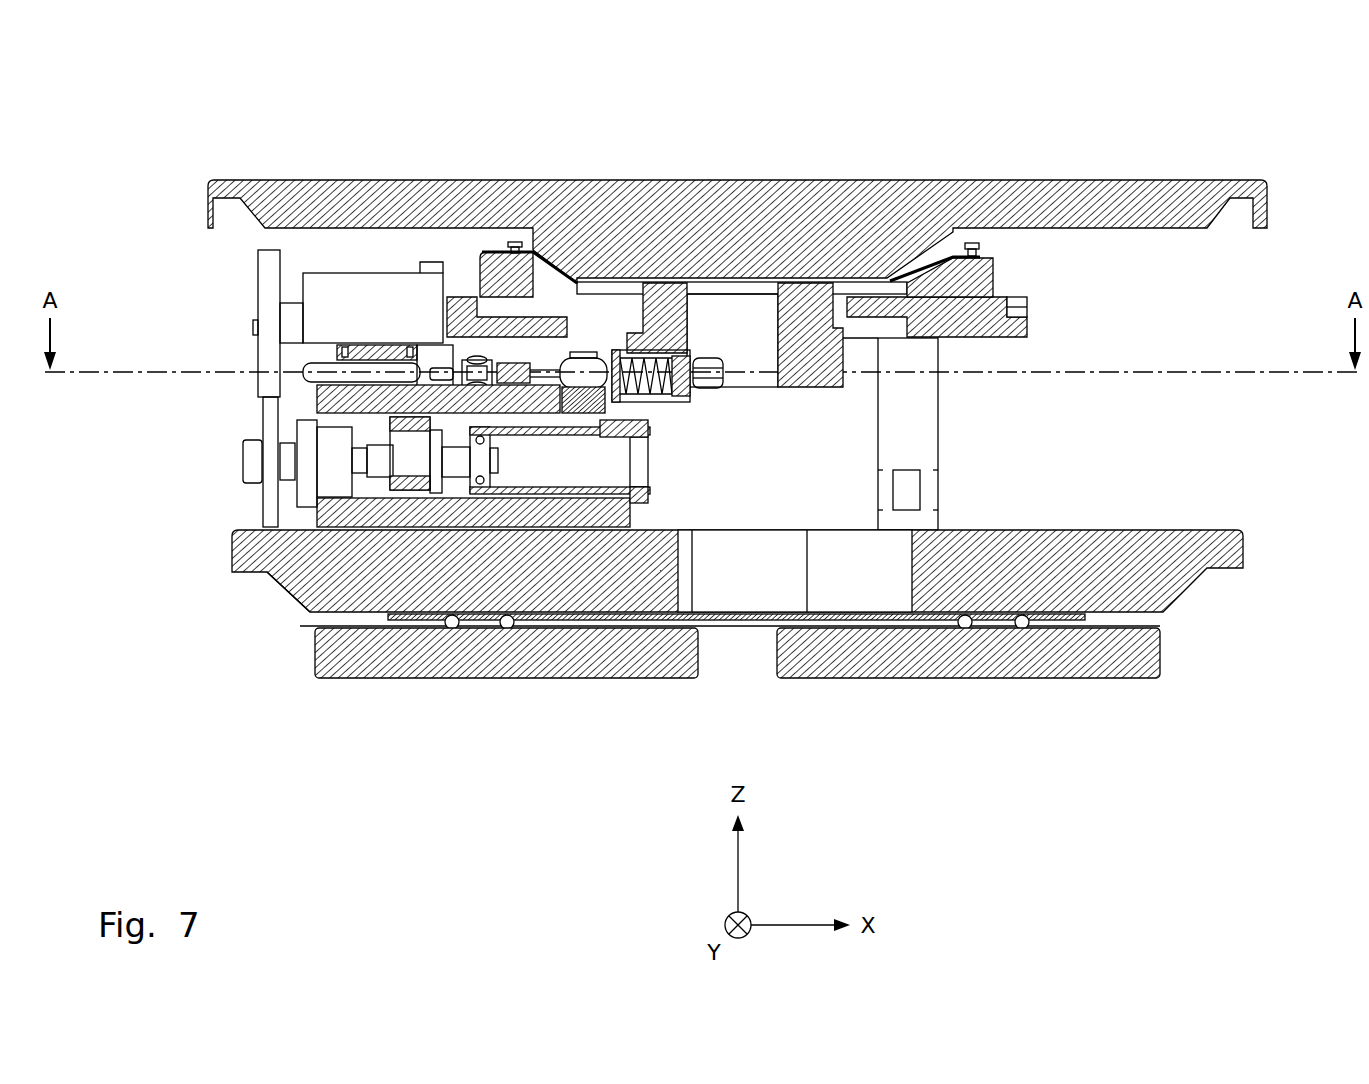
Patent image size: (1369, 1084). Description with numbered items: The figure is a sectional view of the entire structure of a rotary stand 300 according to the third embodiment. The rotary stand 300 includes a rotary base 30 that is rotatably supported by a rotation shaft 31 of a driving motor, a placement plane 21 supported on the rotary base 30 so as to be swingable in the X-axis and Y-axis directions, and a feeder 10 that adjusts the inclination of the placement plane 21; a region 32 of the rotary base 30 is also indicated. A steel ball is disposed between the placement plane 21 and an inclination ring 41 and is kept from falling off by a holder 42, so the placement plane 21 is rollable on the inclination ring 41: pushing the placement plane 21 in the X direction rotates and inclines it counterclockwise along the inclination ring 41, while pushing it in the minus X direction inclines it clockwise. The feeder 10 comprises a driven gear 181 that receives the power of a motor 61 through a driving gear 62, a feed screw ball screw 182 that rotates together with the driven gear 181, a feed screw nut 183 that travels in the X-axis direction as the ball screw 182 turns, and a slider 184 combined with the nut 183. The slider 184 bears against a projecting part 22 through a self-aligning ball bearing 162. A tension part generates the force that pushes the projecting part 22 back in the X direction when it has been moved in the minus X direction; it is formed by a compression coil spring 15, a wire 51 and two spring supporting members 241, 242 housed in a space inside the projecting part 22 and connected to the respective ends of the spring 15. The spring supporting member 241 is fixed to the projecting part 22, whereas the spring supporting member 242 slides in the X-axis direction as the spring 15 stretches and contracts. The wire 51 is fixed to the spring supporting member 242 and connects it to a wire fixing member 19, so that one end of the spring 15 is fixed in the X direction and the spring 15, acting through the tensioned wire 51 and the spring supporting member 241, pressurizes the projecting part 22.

The rotary stand 300 is at (1222, 84).
The placement plane 21 is at (990, 178).
The projecting part 22 is at (657, 290).
The spring 15 is at (645, 352).
The wire fixing member 19 is at (495, 250).
The wire 51 is at (540, 350).
The self-aligning ball bearing 162 is at (563, 365).
The holder 42 is at (985, 250).
The inclination ring 41 is at (980, 275).
The driving gear 62 is at (262, 300).
The motor 61 is at (370, 288).
The feeder 10 is at (180, 362).
The driven gear 181 is at (245, 455).
The spring supporting member 242 is at (697, 390).
The spring supporting member 241 is at (618, 400).
The slider 184 is at (577, 408).
The rotary base 30 is at (1180, 580).
The guide portion 32 is at (305, 608).
The feed screw (nut) 183 is at (407, 480).
The feed screw (ball screw) 182 is at (362, 466).
The rotation shaft 31 is at (748, 668).